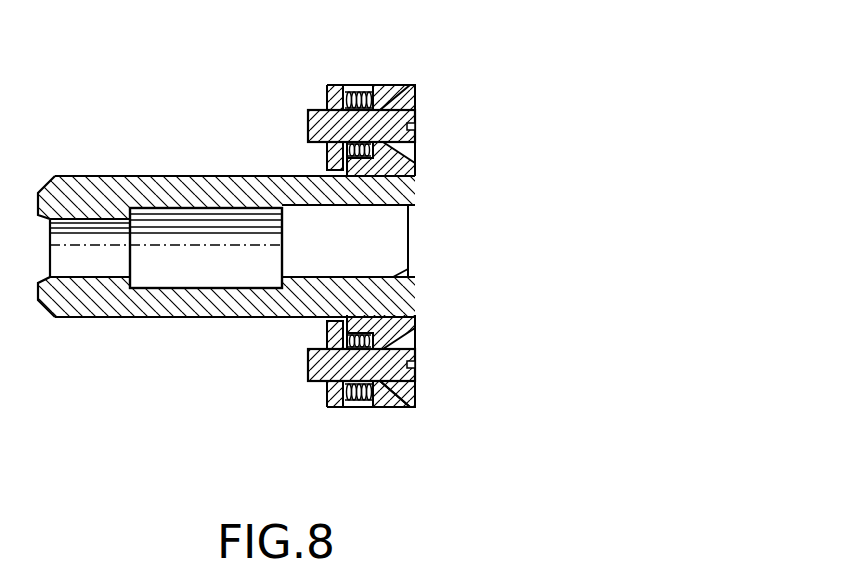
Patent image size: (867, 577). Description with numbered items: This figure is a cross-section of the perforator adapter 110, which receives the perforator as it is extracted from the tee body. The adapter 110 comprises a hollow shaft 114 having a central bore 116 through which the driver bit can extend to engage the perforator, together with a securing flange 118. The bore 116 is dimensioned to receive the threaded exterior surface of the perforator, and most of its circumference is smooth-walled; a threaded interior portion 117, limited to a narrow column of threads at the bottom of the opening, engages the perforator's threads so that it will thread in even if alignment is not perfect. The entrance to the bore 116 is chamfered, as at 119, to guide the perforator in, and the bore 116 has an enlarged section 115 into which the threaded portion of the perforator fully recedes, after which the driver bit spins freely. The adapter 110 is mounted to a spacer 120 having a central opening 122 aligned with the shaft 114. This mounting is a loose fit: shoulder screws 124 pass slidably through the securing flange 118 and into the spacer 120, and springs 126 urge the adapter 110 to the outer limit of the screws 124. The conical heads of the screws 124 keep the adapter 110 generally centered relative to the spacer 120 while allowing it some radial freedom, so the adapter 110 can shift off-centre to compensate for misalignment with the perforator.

The perforator adapter 110 is at (243, 168).
The hollow shaft 114 is at (168, 317).
The enlarged section 115 is at (185, 230).
The central bore 116 is at (95, 238).
The threaded interior portion 117 is at (398, 272).
The securing flange 118 is at (395, 402).
The chamfer 119 is at (400, 206).
The spacer 120 is at (327, 95).
The central opening 122 is at (328, 320).
The shoulder screws 124 is at (400, 113).
The springs 126 is at (370, 88).